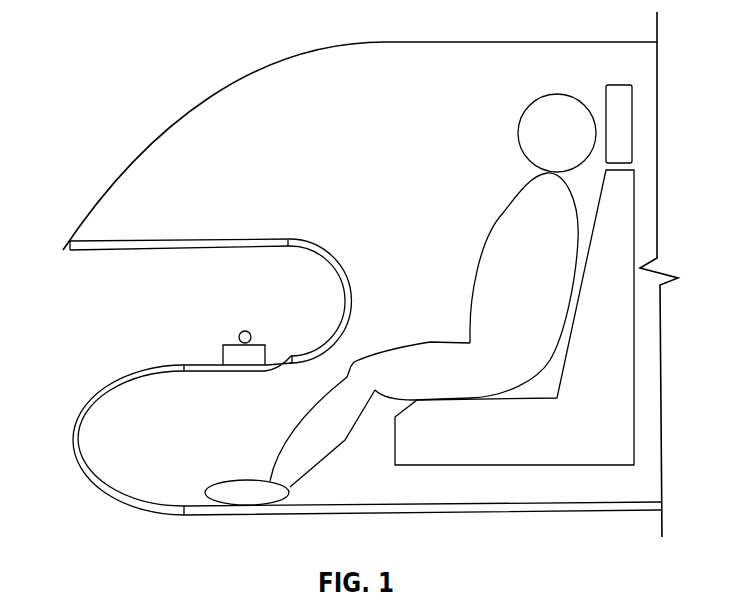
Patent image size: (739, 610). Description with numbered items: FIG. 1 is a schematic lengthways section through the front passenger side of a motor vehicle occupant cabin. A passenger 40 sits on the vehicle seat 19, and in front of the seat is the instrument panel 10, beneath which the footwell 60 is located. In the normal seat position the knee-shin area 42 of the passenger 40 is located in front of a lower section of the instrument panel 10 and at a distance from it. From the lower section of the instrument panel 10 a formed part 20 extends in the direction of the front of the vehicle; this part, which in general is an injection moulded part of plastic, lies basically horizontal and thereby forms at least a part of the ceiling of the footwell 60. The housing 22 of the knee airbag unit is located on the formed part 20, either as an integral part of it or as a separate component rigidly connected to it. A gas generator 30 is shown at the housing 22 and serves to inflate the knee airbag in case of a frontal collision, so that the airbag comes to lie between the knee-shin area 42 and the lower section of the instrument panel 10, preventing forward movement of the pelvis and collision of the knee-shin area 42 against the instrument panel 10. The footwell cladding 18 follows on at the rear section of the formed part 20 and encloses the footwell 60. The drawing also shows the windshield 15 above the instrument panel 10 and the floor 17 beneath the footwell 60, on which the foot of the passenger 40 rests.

The instrument panel 10 is at (302, 240).
The windshield 15 is at (185, 121).
The floor 17 is at (510, 507).
The footwell cladding 18 is at (108, 392).
The vehicle seat 19 is at (532, 443).
The formed part 20 is at (167, 363).
The housing 22 is at (230, 348).
The gas generator 30 is at (247, 331).
The passenger 40 is at (534, 293).
The knee-shin area 42 is at (297, 417).
The footwell 60 is at (195, 442).